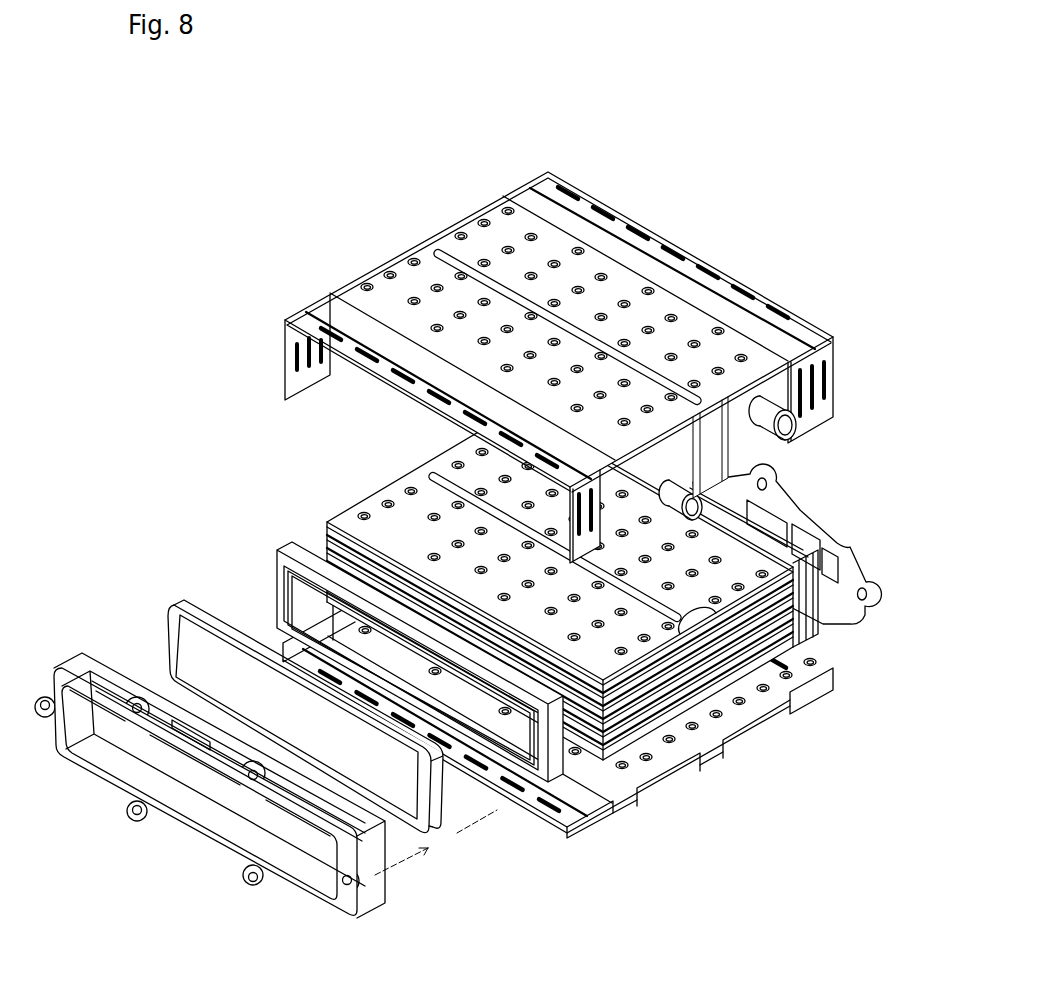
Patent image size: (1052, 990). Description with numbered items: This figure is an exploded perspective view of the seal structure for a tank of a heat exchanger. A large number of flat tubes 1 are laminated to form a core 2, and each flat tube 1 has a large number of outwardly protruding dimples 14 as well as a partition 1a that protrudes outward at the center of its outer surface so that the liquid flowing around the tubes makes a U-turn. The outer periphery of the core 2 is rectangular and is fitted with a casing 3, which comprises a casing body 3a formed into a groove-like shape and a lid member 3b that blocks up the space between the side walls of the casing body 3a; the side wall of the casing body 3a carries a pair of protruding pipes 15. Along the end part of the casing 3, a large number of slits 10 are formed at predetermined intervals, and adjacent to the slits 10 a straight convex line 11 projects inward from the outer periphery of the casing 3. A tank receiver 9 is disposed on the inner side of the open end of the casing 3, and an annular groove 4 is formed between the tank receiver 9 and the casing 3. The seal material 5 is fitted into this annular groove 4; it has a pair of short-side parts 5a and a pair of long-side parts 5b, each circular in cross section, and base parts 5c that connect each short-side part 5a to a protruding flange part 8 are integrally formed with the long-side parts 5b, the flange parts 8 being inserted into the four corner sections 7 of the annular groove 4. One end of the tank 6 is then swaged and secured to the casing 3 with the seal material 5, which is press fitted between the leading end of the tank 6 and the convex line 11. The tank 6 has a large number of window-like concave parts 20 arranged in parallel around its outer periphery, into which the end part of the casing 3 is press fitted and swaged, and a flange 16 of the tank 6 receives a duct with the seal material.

The flat tube 1 is at (545, 586).
The partition 1a is at (714, 608).
The core 2 is at (322, 519).
The casing 3 is at (558, 359).
The casing body 3a is at (558, 365).
The lid member 3b is at (652, 800).
The annular groove 4 is at (318, 578).
The seal material 5 is at (217, 681).
The short-side part 5a is at (165, 660).
The long-side part 5b is at (217, 758).
The base part 5c is at (181, 633).
The tank 6 is at (808, 535).
The corner section 7 is at (283, 557).
The flange part 8 is at (270, 701).
The tank receiver 9 is at (387, 625).
The slit 10 is at (331, 334).
The convex line 11 is at (352, 334).
The dimple 14 is at (414, 260).
The protruding pipe 15 is at (778, 410).
The flange 16 is at (458, 699).
The concave part 20 is at (187, 718).